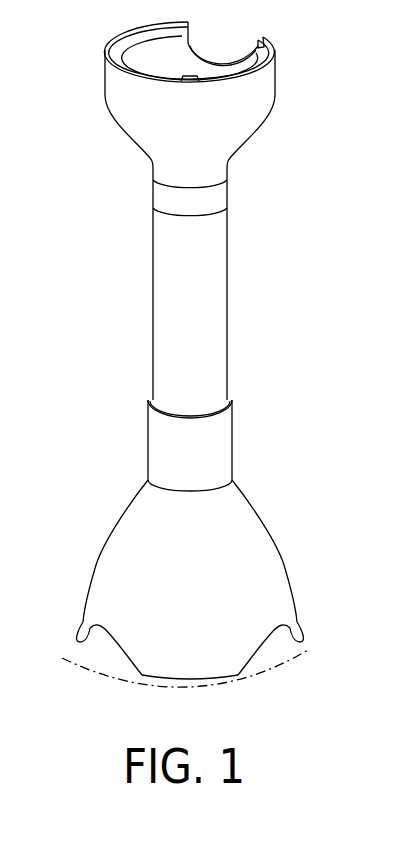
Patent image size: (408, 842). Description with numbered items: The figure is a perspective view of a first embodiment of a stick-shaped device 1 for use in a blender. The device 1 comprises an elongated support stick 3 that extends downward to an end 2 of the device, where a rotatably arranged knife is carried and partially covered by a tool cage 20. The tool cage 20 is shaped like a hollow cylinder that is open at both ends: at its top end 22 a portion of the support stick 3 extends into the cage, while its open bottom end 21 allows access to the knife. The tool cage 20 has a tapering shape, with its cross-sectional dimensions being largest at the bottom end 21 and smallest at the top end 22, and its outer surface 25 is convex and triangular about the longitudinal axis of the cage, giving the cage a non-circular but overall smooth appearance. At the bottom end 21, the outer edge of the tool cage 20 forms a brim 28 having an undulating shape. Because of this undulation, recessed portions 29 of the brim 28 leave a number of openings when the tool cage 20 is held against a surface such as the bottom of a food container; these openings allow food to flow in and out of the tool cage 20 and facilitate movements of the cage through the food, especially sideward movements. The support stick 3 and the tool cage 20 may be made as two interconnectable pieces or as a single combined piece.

The stick-shaped device 1 is at (120, 321).
The support stick 3 is at (208, 268).
The end 2 is at (110, 482).
The top end 22 is at (268, 482).
The outer surface 25 is at (122, 560).
The tool cage 20 is at (258, 560).
The recessed portions 29 is at (103, 641).
The open end 21 is at (310, 650).
The brim 28 is at (132, 668).